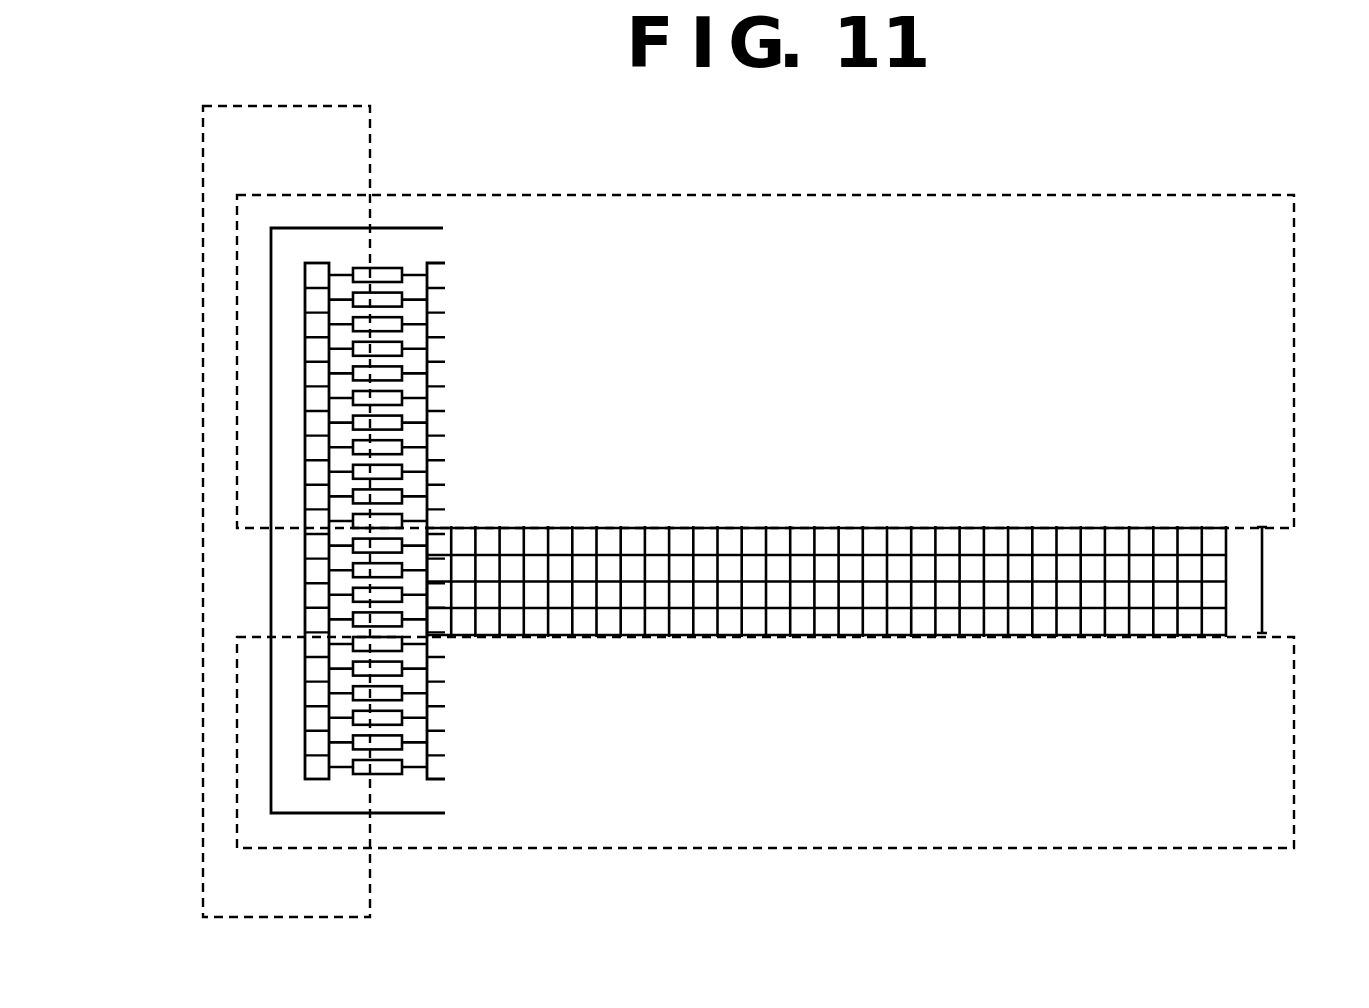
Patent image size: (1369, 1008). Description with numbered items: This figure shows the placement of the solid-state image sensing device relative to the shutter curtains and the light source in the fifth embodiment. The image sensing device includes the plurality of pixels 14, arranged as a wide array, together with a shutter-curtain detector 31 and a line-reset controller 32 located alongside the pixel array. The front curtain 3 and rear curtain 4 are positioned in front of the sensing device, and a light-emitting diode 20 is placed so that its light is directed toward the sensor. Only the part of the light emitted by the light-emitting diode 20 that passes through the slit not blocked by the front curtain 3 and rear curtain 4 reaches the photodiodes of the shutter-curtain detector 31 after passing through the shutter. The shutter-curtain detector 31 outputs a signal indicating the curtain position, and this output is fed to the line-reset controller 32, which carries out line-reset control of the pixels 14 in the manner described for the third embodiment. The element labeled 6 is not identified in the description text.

The driving circuit unit 20 is at (201, 526).
The first substrate region 4 is at (1296, 352).
The second substrate region 3 is at (1296, 736).
The shift register 31 is at (318, 263).
The level shifter / buffer 32 is at (378, 270).
The signal line bus 14 is at (438, 263).
The pixel array 6 is at (1262, 580).